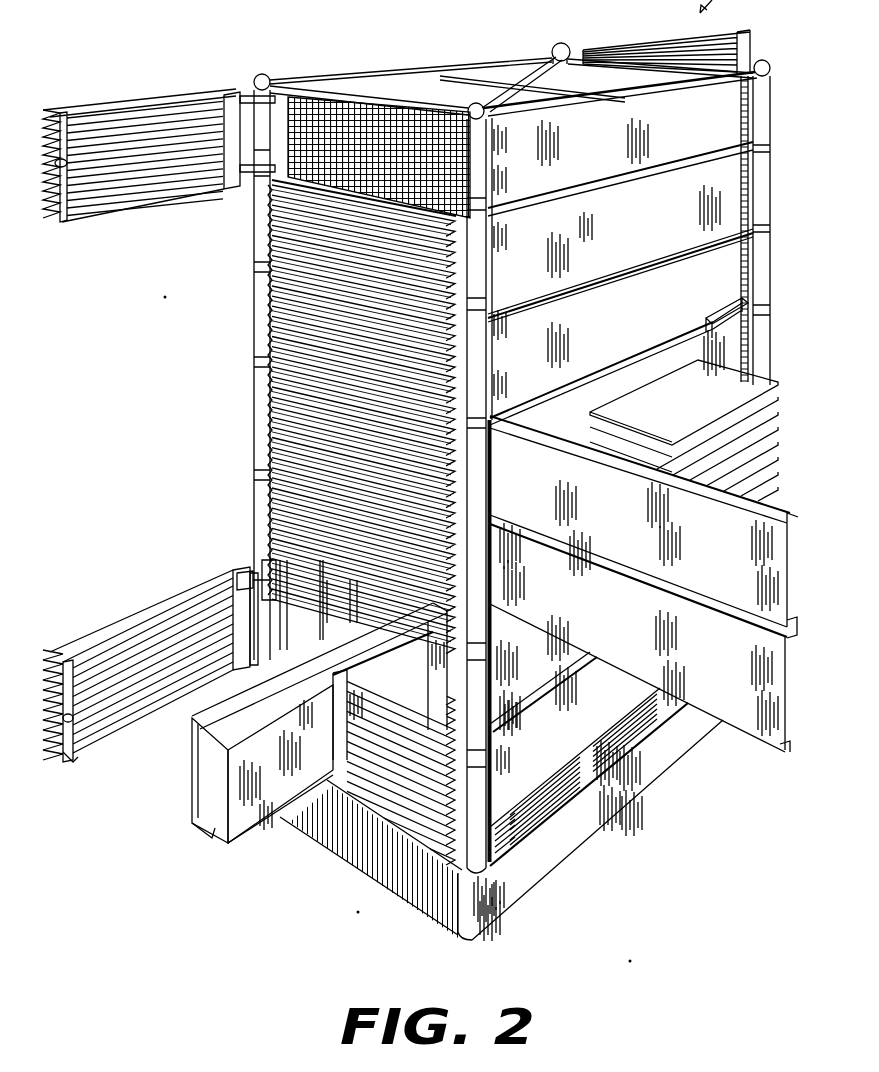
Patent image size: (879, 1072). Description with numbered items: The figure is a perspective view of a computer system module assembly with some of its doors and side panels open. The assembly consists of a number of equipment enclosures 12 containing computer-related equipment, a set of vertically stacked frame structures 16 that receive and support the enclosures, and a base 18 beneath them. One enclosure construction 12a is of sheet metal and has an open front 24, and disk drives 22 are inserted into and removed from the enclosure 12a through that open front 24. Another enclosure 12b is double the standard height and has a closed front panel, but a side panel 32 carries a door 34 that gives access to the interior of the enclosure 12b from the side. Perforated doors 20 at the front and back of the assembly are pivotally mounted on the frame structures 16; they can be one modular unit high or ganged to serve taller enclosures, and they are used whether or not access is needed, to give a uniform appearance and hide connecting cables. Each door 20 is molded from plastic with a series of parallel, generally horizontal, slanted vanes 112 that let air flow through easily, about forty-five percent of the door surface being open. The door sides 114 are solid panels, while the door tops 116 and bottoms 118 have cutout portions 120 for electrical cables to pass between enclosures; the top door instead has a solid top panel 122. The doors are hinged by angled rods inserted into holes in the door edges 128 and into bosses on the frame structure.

The equipment enclosure 12 is at (672, 135).
The enclosure construction 12a is at (520, 687).
The double-height enclosure 12b is at (648, 364).
The frame structure 16 is at (753, 284).
The base 18 is at (627, 786).
The door 20 is at (145, 681).
The disk drive 22 is at (245, 821).
The open front 24 is at (440, 688).
The side panel 32 is at (737, 312).
The door 34 is at (750, 721).
The slanted vanes 112 is at (58, 742).
The door sides 114 is at (62, 756).
The door top 116 is at (129, 620).
The door bottom 118 is at (116, 728).
The cutout portion 120 is at (73, 649).
The solid top panel 122 is at (200, 92).
The door edge 128 is at (247, 572).